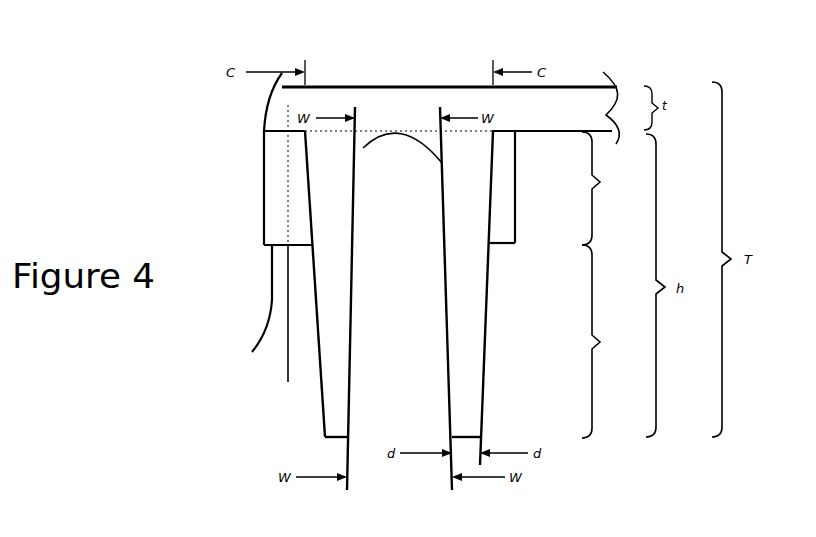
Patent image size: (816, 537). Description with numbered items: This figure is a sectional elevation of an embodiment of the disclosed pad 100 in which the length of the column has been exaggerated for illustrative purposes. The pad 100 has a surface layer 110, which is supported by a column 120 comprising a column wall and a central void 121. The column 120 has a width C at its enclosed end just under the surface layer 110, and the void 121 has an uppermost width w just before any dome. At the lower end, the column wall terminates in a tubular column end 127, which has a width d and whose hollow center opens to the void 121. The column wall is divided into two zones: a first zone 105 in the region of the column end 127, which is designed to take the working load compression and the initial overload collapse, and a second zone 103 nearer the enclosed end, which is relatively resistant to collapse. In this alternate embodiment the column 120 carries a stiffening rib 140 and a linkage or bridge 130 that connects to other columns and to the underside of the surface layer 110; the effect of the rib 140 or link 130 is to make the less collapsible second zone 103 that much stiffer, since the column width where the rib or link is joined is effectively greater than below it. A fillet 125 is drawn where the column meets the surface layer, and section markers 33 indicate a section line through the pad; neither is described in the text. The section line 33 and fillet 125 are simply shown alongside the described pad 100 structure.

The pad 100 is at (403, 253).
The surface layer 110 is at (393, 103).
The column 120 is at (301, 298).
The central void 121 is at (380, 185).
The fillet between tines 125 is at (393, 133).
The column end 127 is at (349, 440).
The linkage or bridge 130 is at (276, 200).
The stiffening rib 140 is at (497, 228).
The second zone 103 is at (607, 188).
The first zone 105 is at (607, 341).
The section line 3-3 33 is at (288, 105).